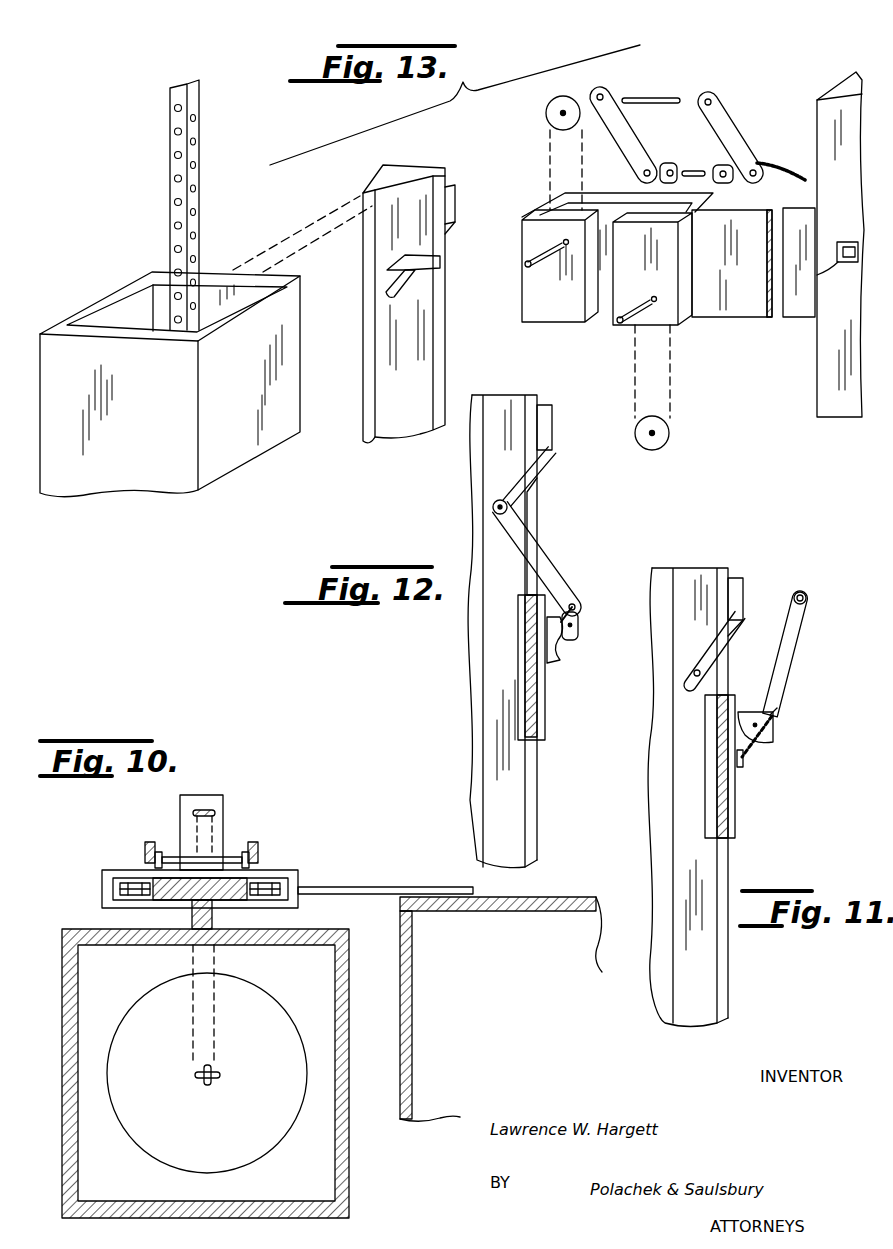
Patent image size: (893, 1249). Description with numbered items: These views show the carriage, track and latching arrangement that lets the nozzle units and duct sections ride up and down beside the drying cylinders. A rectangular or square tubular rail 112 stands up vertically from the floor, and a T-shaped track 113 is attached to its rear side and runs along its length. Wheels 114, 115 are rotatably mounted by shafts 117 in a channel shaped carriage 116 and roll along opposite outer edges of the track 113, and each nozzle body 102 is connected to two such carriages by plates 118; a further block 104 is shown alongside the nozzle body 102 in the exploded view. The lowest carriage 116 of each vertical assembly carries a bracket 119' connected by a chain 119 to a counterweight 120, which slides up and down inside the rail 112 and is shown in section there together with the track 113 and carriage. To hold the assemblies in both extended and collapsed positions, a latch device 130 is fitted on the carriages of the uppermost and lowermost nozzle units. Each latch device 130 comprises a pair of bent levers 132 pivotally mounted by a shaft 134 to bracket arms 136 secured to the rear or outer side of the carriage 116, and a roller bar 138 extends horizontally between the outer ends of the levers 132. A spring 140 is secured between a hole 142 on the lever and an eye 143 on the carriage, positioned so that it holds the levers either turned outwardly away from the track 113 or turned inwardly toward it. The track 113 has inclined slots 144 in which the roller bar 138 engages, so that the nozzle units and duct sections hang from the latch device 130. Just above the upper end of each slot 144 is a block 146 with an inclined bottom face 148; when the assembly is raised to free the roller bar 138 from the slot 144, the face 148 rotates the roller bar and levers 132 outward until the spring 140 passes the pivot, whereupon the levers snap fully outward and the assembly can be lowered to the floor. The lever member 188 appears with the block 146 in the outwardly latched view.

In FIG. 13, the nozzle body 102 is at (828, 393).
In FIG. 10, the nozzle body 102 is at (554, 884).
In FIG. 13, the block 104 is at (845, 262).
In FIG. 13, the tubular rail 112 is at (252, 446).
In FIG. 12, the tubular rail 112 is at (483, 448).
In FIG. 10, the tubular rail 112 is at (219, 1216).
In FIG. 13, the T-shaped track 113 is at (420, 358).
In FIG. 12, the T-shaped track 113 is at (555, 578).
In FIG. 11, the T-shaped track 113 is at (655, 776).
In FIG. 10, the T-shaped track 113 is at (212, 918).
In FIG. 13, the wheel 114 is at (546, 113).
In FIG. 10, the wheel 114 is at (123, 878).
In FIG. 13, the wheel 115 is at (652, 441).
In FIG. 10, the wheel 115 is at (276, 888).
In FIG. 13, the channel shaped carriage 116 is at (553, 323).
In FIG. 12, the channel shaped carriage 116 is at (547, 729).
In FIG. 11, the channel shaped carriage 116 is at (736, 800).
In FIG. 10, the channel shaped carriage 116 is at (299, 877).
In FIG. 13, the shaft 117 is at (527, 262).
In FIG. 13, the plate 118 is at (740, 318).
In FIG. 12, the plate 118 is at (536, 703).
In FIG. 11, the plate 118 is at (717, 822).
In FIG. 10, the plate 118 is at (410, 887).
In FIG. 13, the chain 119 is at (155, 205).
In FIG. 10, the chain 119 is at (228, 808).
In FIG. 10, the bracket 119' is at (201, 808).
In FIG. 10, the counterweight 120 is at (248, 1148).
In FIG. 13, the latch device 130 is at (672, 92).
In FIG. 11, the latch device 130 is at (793, 689).
In FIG. 13, the bent lever 132 is at (740, 135).
In FIG. 11, the bent lever 132 is at (792, 639).
In FIG. 10, the bent lever 132 is at (258, 850).
In FIG. 13, the shaft 134 is at (688, 170).
In FIG. 12, the shaft 134 is at (579, 623).
In FIG. 10, the shaft 134 is at (234, 852).
In FIG. 13, the bracket arm 136 is at (665, 163).
In FIG. 12, the bracket arm 136 is at (560, 617).
In FIG. 11, the bracket arm 136 is at (745, 712).
In FIG. 10, the bracket arm 136 is at (254, 863).
In FIG. 13, the roller bar 138 is at (665, 97).
In FIG. 12, the roller bar 138 is at (494, 512).
In FIG. 11, the roller bar 138 is at (808, 598).
In FIG. 13, the spring 140 is at (794, 168).
In FIG. 12, the spring 140 is at (575, 600).
In FIG. 11, the spring 140 is at (757, 740).
In FIG. 11, the hole 142 is at (785, 710).
In FIG. 11, the eye 143 is at (745, 761).
In FIG. 13, the inclined slot 144 is at (440, 262).
In FIG. 12, the inclined slot 144 is at (485, 484).
In FIG. 11, the inclined slot 144 is at (694, 671).
In FIG. 13, the block 146 is at (450, 186).
In FIG. 12, the block 146 is at (548, 432).
In FIG. 11, the block 146 is at (736, 585).
In FIG. 13, the inclined bottom face 148 is at (448, 232).
In FIG. 12, the inclined bottom face 148 is at (548, 456).
In FIG. 11, the bracket 188 is at (737, 628).